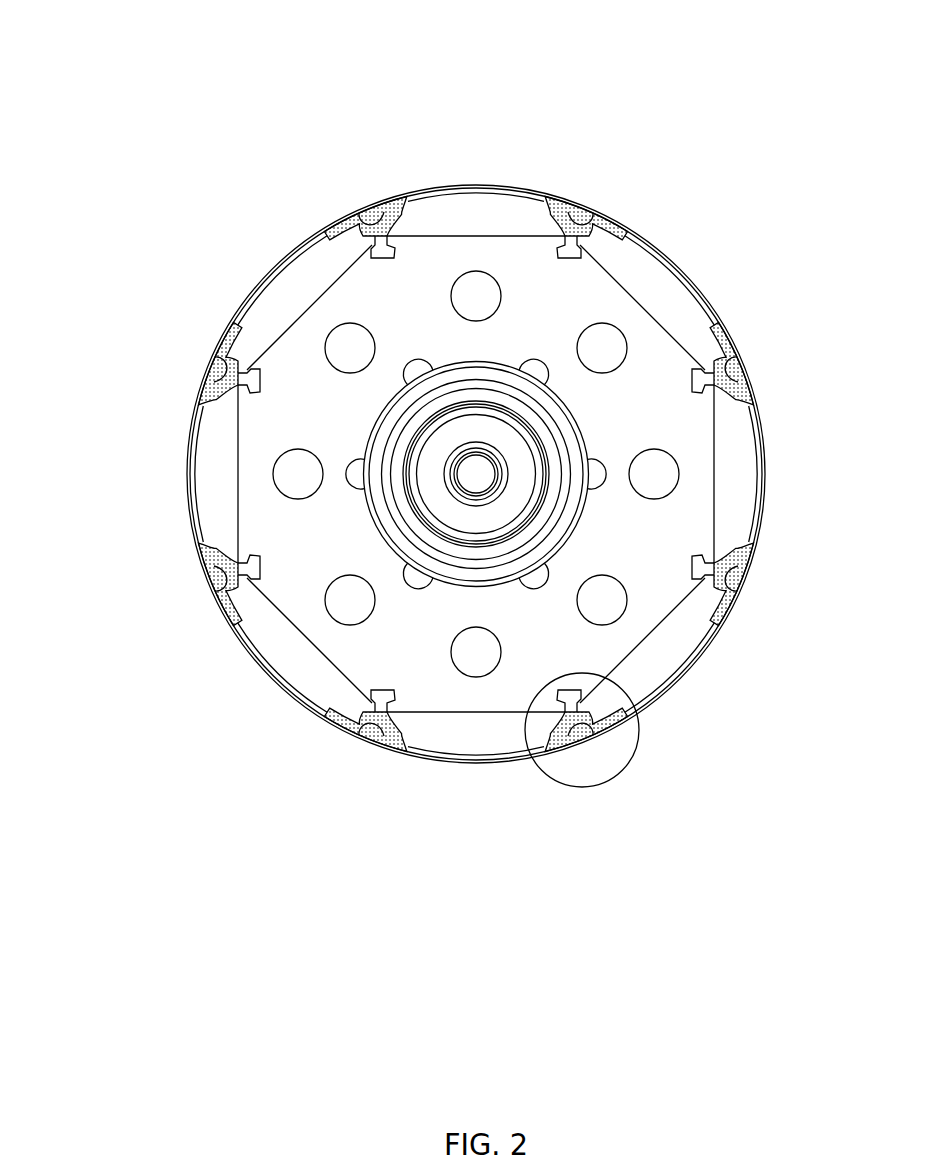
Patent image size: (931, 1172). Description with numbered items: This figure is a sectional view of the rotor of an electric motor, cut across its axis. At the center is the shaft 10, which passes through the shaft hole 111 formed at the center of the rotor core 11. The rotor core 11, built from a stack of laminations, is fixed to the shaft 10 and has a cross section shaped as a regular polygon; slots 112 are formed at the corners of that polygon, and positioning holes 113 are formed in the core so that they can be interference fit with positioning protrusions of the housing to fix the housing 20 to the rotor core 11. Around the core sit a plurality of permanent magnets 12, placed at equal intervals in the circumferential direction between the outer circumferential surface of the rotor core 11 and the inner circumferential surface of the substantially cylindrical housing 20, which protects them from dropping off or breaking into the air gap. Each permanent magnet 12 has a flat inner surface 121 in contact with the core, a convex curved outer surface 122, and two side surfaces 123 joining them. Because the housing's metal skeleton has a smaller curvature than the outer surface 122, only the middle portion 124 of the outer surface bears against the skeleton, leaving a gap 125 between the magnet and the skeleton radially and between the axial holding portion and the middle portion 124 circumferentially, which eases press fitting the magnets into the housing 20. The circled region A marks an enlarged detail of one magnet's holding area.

The shaft 10 is at (336, 407).
The rotor core 11 is at (367, 288).
The permanent magnet 12 is at (475, 127).
The inner surface 121 is at (478, 236).
The outer surface 122 is at (433, 200).
The side surface 123 is at (588, 105).
The middle portion 124 is at (682, 265).
The gap 125 is at (630, 228).
The housing 20 is at (728, 338).
The shaft hole 111 is at (360, 472).
The slot 112 is at (243, 578).
The positioning hole 113 is at (298, 473).
The detail region A is at (615, 778).